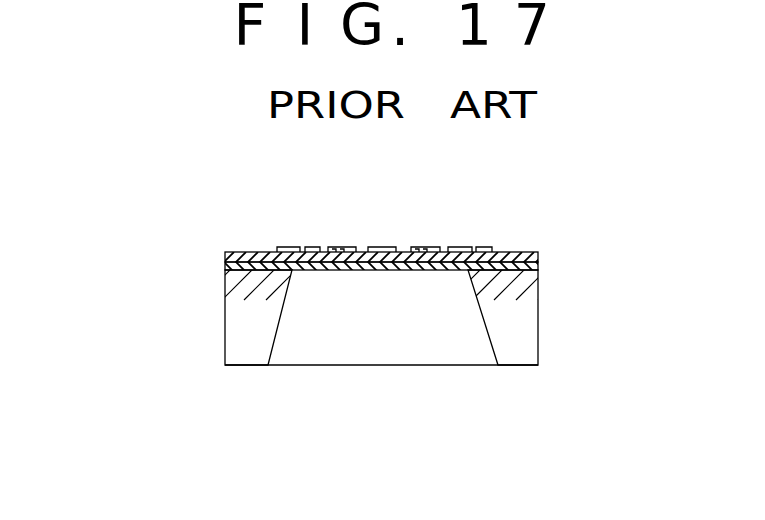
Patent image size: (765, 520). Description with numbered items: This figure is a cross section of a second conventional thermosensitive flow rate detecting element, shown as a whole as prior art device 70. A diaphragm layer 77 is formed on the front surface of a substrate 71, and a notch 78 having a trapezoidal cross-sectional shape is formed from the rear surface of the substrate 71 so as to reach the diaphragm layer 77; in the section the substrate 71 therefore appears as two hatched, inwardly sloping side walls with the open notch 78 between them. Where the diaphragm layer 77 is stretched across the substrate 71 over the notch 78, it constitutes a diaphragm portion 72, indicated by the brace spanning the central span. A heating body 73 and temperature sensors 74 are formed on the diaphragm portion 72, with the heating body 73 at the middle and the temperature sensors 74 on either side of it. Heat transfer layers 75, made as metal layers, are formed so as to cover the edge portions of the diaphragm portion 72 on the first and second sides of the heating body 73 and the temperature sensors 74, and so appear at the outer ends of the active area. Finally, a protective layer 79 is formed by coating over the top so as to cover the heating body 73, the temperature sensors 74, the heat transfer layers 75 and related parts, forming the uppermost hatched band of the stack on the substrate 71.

The prior art semiconductor device 70 is at (202, 179).
The substrate 71 is at (538, 305).
The diaphragm portion 72 is at (468, 281).
The heating body 73 is at (377, 246).
The temperature sensors 74 is at (330, 246).
The heat transfer layers 75 is at (293, 246).
The diaphragm layer 77 is at (538, 265).
The notches 78 is at (328, 347).
The protective layer 79 is at (536, 250).